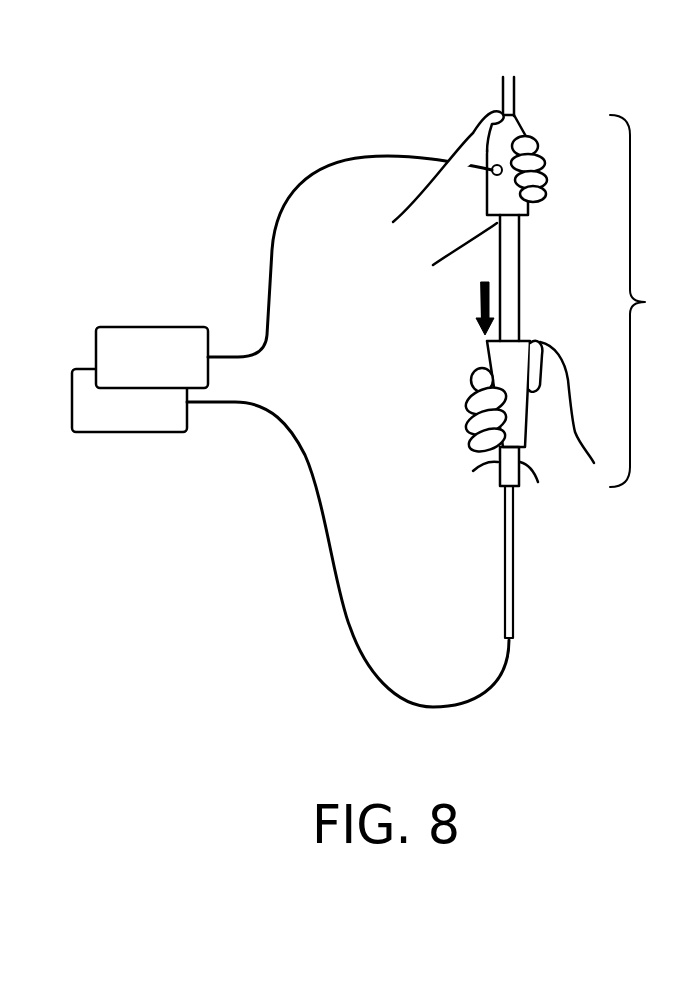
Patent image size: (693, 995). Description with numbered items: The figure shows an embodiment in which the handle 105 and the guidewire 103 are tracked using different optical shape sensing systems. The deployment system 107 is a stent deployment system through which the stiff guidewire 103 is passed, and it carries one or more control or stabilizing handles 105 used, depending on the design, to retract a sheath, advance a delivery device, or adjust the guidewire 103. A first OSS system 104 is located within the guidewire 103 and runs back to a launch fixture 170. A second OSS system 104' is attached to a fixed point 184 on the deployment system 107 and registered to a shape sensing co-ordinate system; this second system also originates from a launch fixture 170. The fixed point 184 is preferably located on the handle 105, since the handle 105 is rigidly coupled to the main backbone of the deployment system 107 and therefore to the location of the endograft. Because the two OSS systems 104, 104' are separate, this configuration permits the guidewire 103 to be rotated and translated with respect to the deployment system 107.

The guidewire 103 is at (513, 563).
The OSS system 104 is at (348, 554).
The second OSS system 104' is at (350, 243).
The handle 105 is at (523, 128).
The deployment system 107 is at (651, 301).
The launch fixture 170 is at (152, 327).
The fixed point 184 is at (492, 151).